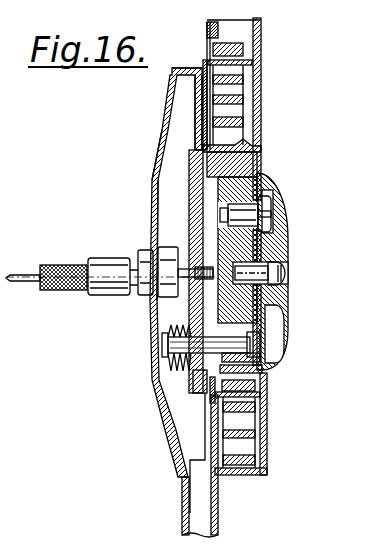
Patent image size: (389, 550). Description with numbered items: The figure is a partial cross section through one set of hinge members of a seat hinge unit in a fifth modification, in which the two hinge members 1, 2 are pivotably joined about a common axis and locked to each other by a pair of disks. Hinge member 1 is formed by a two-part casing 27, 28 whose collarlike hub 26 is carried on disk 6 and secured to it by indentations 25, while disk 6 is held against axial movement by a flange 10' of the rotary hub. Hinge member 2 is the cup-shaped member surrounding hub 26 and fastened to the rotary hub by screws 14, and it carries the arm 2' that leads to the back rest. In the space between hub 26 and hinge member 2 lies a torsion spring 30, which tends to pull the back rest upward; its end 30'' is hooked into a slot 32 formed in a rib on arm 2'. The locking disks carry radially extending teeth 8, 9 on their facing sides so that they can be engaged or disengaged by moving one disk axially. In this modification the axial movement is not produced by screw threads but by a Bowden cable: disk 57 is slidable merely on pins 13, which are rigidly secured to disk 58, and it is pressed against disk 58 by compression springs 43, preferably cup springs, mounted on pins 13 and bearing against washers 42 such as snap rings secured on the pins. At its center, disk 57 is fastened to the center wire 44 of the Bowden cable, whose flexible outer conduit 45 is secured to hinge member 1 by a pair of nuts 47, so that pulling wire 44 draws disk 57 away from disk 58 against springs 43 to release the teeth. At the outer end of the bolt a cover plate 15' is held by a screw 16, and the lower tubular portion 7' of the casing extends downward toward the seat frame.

The hinge member 1 is at (152, 105).
The hinge member 2 is at (262, 195).
The arm 2' is at (276, 190).
The disk 6 is at (257, 163).
The lower tube 7' is at (227, 455).
The teeth 8 is at (198, 147).
The teeth 9 is at (143, 112).
The flange 10' is at (272, 376).
The pins 13 is at (252, 347).
The screws 14 is at (257, 211).
The cover plate 15' is at (292, 214).
The screw 16 is at (286, 265).
The indentations 25 is at (260, 155).
The collarlike hub 26 is at (258, 395).
The casing part 27 is at (187, 67).
The casing part 28 is at (157, 155).
The torsion spring 30 is at (261, 266).
The spring end 30'' is at (258, 52).
The slot 32 is at (208, 45).
The washers 42 is at (163, 345).
The compression springs 43 is at (180, 325).
The center wire 44 is at (25, 283).
The flexible outer conduit 45 is at (50, 267).
The nuts 47 is at (163, 253).
The disk 57 is at (188, 185).
The disk 58 is at (240, 193).